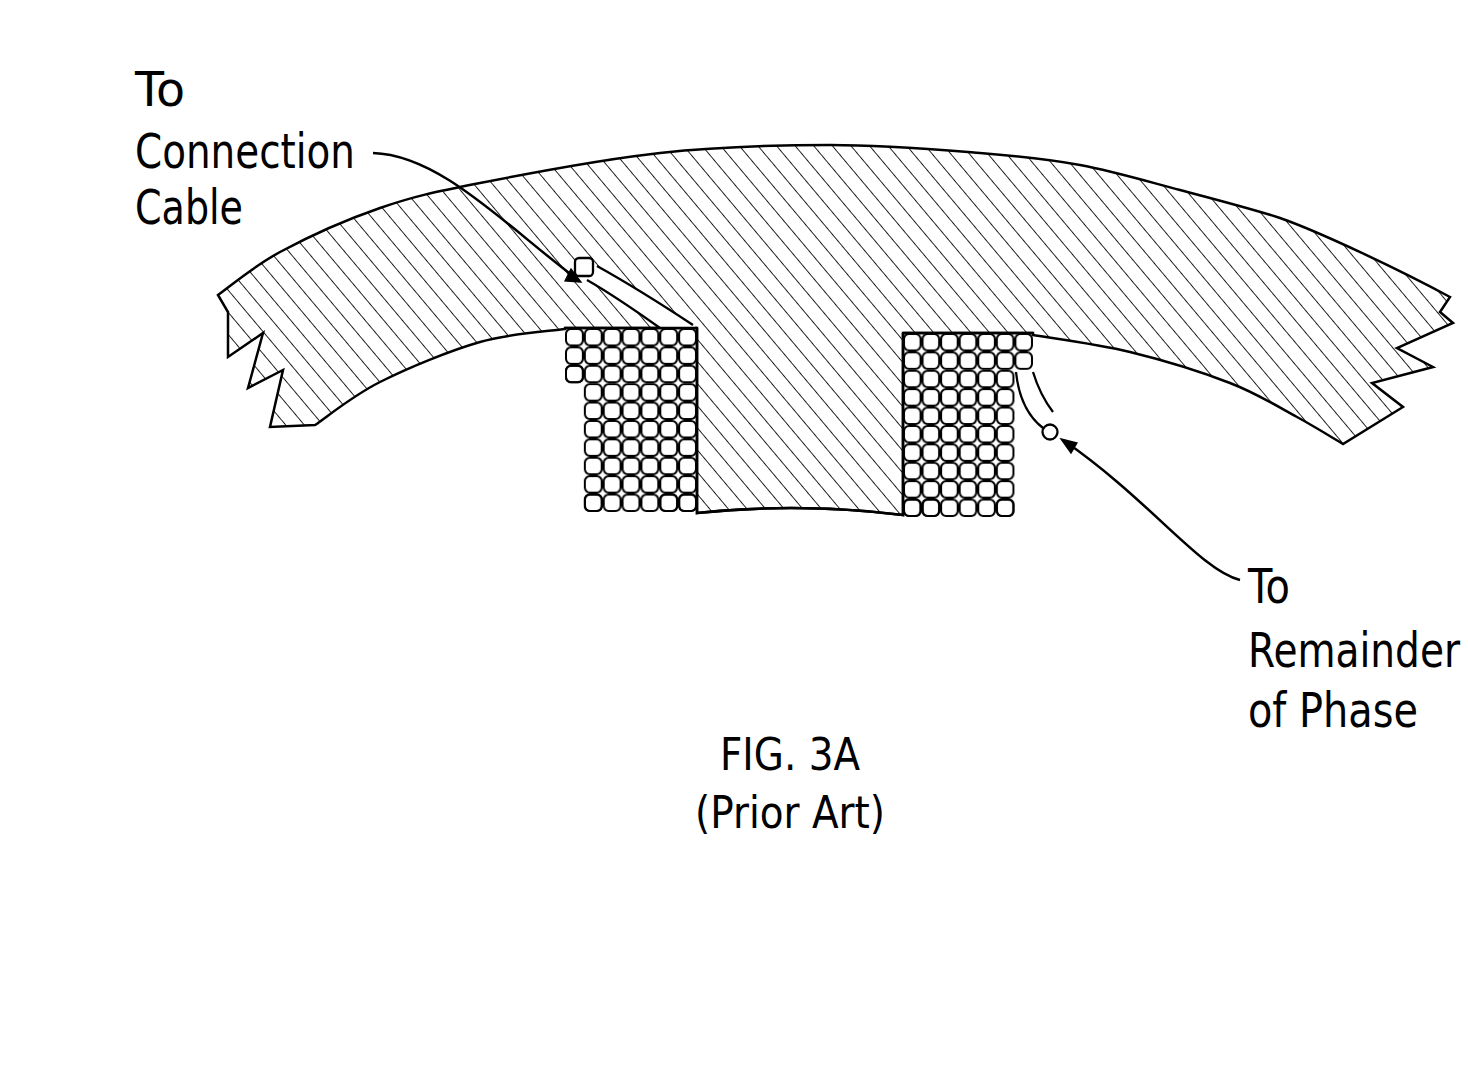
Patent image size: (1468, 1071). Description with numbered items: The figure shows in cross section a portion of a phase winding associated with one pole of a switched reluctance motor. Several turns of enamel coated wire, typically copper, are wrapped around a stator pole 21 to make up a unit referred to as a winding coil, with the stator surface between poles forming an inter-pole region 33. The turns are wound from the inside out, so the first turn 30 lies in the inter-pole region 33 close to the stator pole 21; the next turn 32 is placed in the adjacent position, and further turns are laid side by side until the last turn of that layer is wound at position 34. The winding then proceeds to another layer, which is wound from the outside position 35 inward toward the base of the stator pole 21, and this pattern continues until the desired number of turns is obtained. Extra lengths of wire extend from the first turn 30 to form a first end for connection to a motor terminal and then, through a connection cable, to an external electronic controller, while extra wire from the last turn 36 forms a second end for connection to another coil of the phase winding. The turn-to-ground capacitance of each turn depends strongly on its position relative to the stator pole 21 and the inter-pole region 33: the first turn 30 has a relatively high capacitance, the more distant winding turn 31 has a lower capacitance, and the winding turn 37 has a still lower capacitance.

The stator pole 21 is at (803, 490).
The turn 30 is at (618, 282).
The winding turn 31 is at (612, 412).
The turn 32 is at (690, 357).
The inter-pole region 33 is at (1318, 425).
The position 34 is at (685, 505).
The position 35 is at (665, 505).
The last turn 36 is at (570, 388).
The winding turn 37 is at (593, 505).